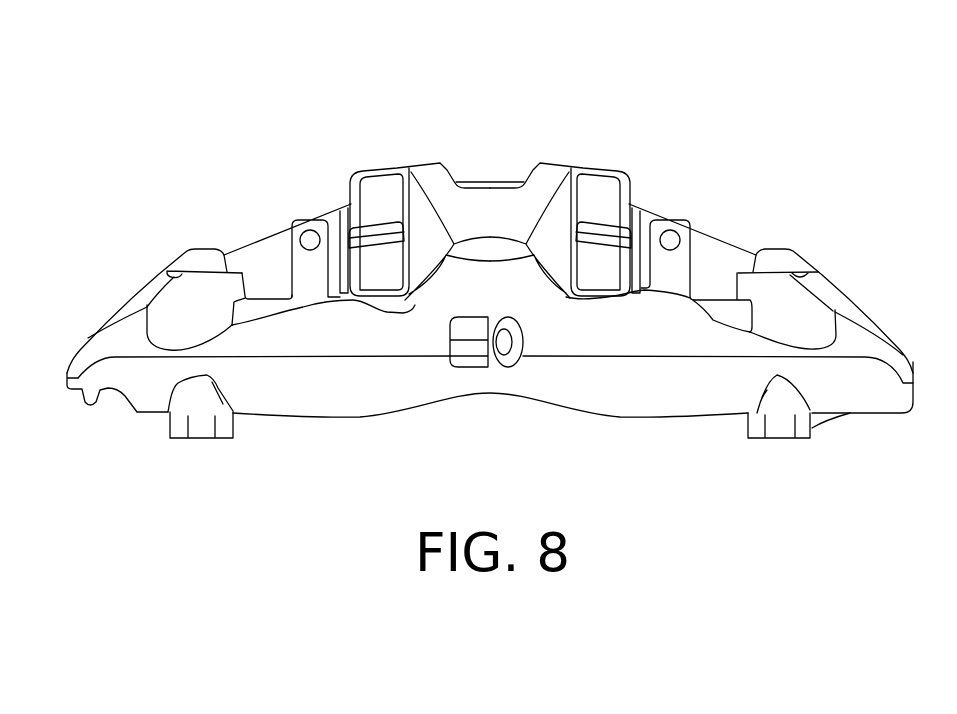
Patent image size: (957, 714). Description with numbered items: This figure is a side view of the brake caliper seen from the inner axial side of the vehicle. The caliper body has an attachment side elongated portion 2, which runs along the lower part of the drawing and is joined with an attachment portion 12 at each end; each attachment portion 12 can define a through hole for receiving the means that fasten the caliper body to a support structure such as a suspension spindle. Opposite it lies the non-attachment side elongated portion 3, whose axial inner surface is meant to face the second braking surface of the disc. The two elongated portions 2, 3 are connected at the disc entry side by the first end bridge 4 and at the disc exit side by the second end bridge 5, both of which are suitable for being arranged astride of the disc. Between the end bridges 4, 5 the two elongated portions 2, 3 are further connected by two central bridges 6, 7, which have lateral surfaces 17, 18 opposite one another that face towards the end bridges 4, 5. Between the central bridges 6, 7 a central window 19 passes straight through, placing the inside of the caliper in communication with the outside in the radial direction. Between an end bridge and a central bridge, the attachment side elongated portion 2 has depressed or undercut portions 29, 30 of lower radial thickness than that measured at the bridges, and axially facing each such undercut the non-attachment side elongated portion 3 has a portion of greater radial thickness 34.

The attachment side elongated portion 2 is at (557, 383).
The non-attachment side elongated portion 3 is at (653, 207).
The first end bridge 4 is at (853, 285).
The second end bridge 5 is at (153, 285).
The central bridge 6 is at (562, 168).
The central bridge 7 is at (440, 163).
The attachment portion 12 is at (203, 422).
The radial or lateral surface 17 is at (597, 192).
The radial or lateral surface 18 is at (375, 192).
The central window 19 is at (494, 165).
The depressed or undercut portion 29 is at (268, 258).
The depressed or undercut portion 30 is at (387, 255).
The portion of greater radial thickness 34 is at (340, 230).